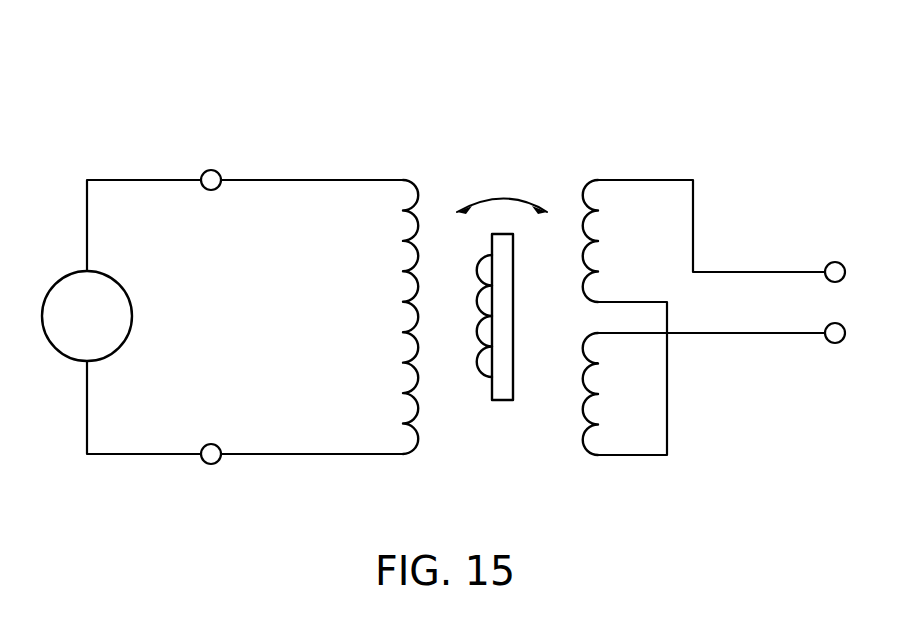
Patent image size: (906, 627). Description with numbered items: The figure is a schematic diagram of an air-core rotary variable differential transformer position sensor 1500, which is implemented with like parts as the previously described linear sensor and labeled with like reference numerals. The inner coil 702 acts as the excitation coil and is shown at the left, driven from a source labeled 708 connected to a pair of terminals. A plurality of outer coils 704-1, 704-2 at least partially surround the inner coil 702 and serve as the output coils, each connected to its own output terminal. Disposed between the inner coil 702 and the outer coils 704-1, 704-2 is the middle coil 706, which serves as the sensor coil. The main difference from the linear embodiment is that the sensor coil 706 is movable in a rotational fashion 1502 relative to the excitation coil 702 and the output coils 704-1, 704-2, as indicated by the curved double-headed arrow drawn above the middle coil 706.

The rotary variable differential transformer position sensor 1500 is at (560, 138).
The rotational fashion 1502 is at (505, 196).
The inner coil 702 is at (412, 177).
The first outer coil 704-1 is at (595, 178).
The second outer coil 704-2 is at (590, 456).
The middle coil 706 is at (500, 401).
The power source 708 is at (57, 283).